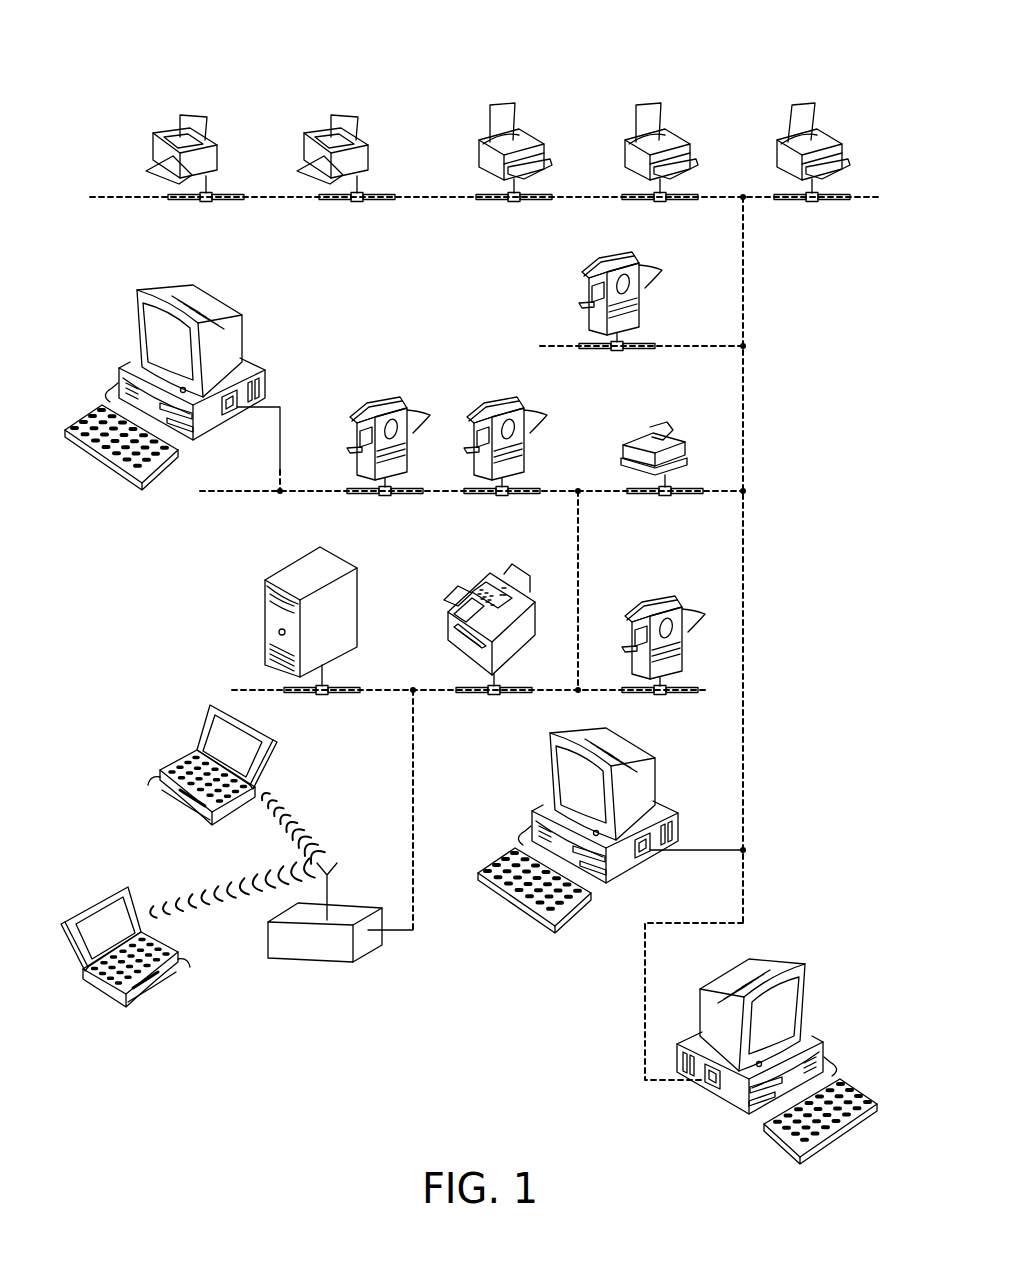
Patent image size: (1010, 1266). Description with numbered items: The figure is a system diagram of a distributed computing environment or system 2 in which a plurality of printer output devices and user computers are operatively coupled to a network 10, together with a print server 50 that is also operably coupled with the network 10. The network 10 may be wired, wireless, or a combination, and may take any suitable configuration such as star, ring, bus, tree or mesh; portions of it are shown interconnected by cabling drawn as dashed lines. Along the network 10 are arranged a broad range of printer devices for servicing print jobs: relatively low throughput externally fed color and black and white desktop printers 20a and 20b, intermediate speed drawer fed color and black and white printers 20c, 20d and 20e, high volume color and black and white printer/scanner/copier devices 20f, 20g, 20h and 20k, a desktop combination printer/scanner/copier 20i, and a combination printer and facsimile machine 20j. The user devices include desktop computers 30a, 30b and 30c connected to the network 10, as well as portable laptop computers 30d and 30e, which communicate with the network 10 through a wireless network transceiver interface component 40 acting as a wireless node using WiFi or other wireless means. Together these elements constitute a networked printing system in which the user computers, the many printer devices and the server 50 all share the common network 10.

The distributed computing environment or system 2 is at (110, 30).
The network 10 is at (743, 244).
The externally fed color desktop printer 20a is at (152, 151).
The externally fed black and white desktop printer 20b is at (302, 158).
The drawer fed color and black and white printer 20c is at (480, 168).
The drawer fed color and black and white printer 20d is at (622, 168).
The drawer fed color and black and white printer 20e is at (776, 168).
The high volume printer/scanner/copier device 20f is at (588, 322).
The high volume printer/scanner/copier device 20g is at (353, 465).
The high volume printer/scanner/copier device 20h is at (471, 465).
The desktop combination printer/scanner/copier 20i is at (622, 455).
The combination printer and facsimile machine 20j is at (448, 624).
The high volume printer/scanner/copier device 20k is at (682, 667).
The desktop computer 30a is at (235, 330).
The desktop computer 30b is at (680, 829).
The desktop computer 30c is at (826, 1049).
The laptop computer 30d is at (158, 779).
The laptop computer 30e is at (82, 972).
The wireless network transceiver interface component 40 is at (269, 946).
The print server 50 is at (265, 620).